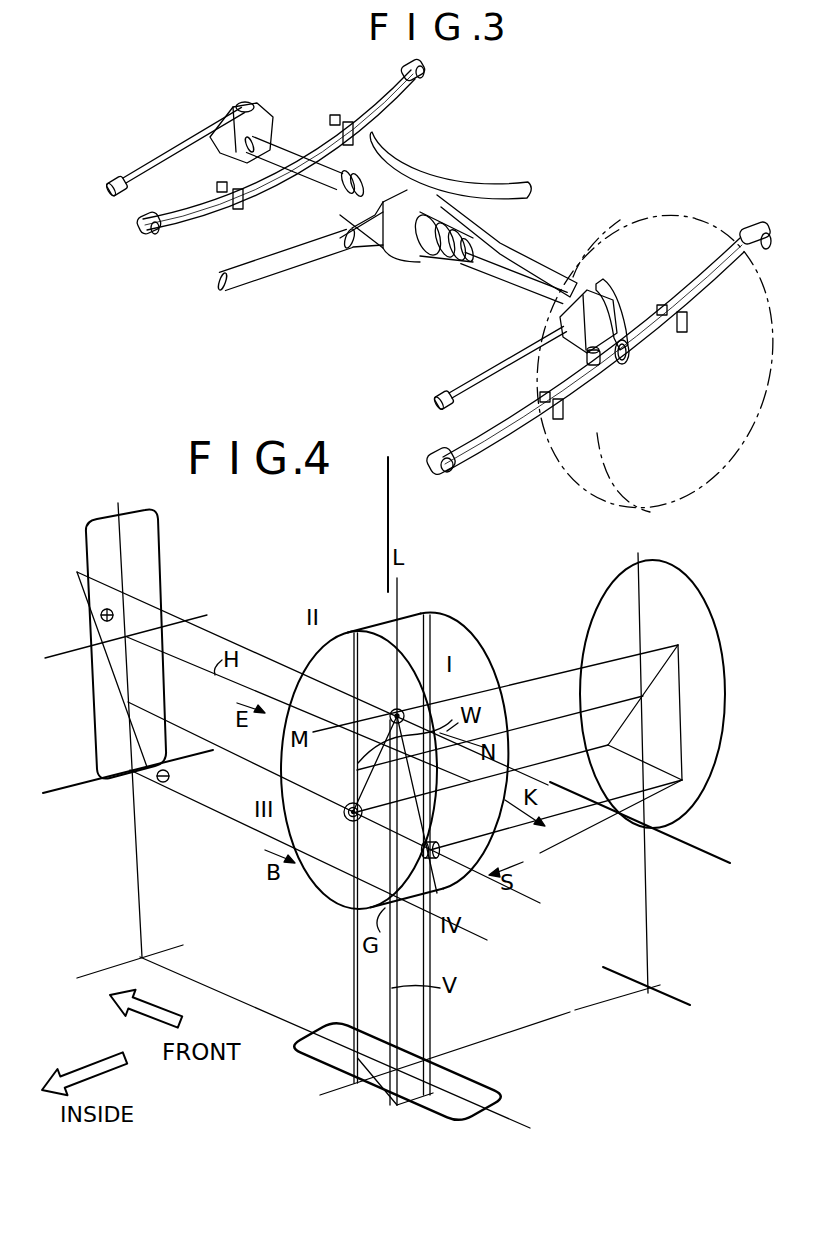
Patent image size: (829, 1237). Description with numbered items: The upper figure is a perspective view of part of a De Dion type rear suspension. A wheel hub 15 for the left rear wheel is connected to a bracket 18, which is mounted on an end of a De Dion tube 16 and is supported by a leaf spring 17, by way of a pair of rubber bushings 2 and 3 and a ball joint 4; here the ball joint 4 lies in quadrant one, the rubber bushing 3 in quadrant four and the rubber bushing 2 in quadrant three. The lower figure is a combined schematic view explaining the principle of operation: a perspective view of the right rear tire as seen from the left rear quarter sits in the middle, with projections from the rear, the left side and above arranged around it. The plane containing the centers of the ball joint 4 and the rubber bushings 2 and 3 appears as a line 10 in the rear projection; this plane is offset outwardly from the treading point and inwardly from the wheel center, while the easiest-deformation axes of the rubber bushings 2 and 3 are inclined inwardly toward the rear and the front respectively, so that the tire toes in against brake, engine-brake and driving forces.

In FIG. 3, the rubber bushing 2 is at (587, 405).
In FIG. 4, the rubber bushing 2 is at (345, 818).
In FIG. 3, the rubber bushing 3 is at (617, 378).
In FIG. 4, the rubber bushing 3 is at (436, 846).
In FIG. 3, the ball joint 4 is at (611, 290).
In FIG. 4, the ball joint 4 is at (394, 710).
In FIG. 4, the line (plane) 10 is at (110, 673).
In FIG. 3, the wheel hub 15 is at (630, 363).
In FIG. 3, the De Dion tube 16 is at (311, 148).
In FIG. 3, the leaf spring 17 is at (371, 101).
In FIG. 3, the bracket 18 is at (224, 125).